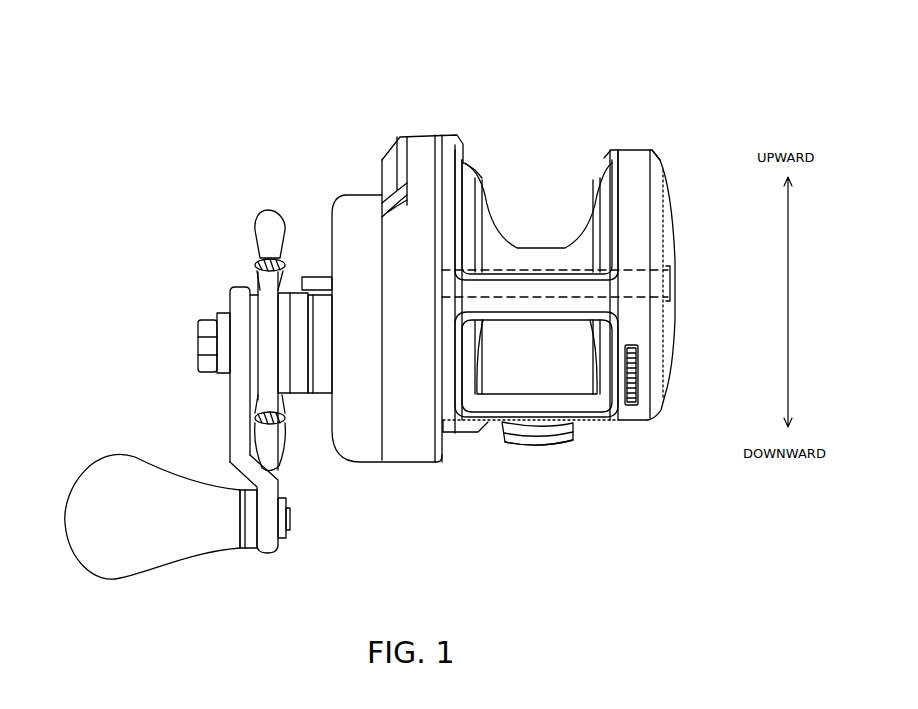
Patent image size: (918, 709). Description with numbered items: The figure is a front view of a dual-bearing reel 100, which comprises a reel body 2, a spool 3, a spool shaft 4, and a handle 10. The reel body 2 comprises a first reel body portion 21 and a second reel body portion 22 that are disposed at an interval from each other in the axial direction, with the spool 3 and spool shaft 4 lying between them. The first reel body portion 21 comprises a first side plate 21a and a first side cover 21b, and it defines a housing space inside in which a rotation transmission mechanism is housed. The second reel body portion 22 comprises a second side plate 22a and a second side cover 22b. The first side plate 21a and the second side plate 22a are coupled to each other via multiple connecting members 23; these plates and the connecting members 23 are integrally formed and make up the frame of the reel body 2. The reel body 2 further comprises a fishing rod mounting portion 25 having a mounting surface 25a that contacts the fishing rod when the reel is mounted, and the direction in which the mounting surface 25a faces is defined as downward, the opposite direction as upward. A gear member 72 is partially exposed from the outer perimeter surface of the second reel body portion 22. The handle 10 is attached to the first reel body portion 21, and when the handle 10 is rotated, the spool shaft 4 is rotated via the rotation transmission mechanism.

The dual-bearing reel 100 is at (681, 86).
The reel body 2 is at (462, 106).
The first reel body portion 21 is at (435, 133).
The first side plate 21a is at (463, 145).
The first side cover 21b is at (393, 147).
The second reel body portion 22 is at (635, 148).
The second side plate 22a is at (615, 145).
The second side cover 22b is at (667, 178).
The spool 3 is at (545, 248).
The spool shaft 4 is at (518, 268).
The gear member 72 is at (638, 380).
The fishing rod mounting portion 25 is at (570, 436).
The mounting surface 25a is at (540, 443).
The connecting members 23 is at (530, 310).
The handle 10 is at (192, 555).